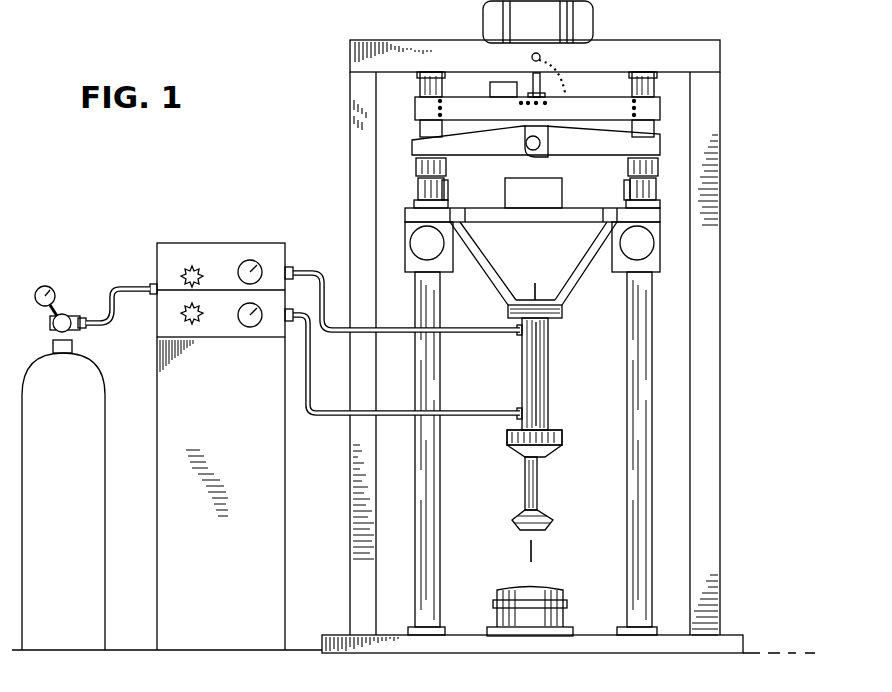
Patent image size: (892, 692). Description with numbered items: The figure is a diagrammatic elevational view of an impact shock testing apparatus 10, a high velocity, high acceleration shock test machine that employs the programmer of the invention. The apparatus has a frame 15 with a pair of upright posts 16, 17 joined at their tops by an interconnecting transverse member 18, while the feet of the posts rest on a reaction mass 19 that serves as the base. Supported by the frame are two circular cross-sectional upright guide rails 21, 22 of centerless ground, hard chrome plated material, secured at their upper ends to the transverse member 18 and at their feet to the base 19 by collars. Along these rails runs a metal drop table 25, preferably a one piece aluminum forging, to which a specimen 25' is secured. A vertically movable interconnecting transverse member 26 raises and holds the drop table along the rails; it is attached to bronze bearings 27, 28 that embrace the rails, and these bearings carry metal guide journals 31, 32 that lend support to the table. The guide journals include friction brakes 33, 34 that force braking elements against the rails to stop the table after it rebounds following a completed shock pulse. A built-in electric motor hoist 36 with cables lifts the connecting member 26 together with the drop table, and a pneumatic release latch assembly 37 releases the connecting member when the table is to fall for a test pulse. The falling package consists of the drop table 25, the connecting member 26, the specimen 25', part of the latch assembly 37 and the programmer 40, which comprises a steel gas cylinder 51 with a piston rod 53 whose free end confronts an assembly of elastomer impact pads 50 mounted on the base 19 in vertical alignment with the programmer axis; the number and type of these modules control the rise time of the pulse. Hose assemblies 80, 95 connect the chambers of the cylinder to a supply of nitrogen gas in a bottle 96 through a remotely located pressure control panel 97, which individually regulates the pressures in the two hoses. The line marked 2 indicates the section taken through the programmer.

The section line 2- 2 is at (545, 292).
The impact shock testing apparatus 10 is at (489, 444).
The frame 15 is at (342, 72).
The upright post 16 is at (350, 573).
The upright post 17 is at (718, 602).
The interconnecting transverse member 18 is at (366, 40).
The reaction mass 19 is at (331, 634).
The guide rail 21 is at (417, 487).
The guide rail 22 is at (650, 497).
The drop table 25 is at (533, 270).
The specimen 25' is at (509, 193).
The interconnecting transverse member 26 is at (456, 270).
The bearing 27 is at (418, 172).
The bearing 28 is at (650, 182).
The guide journal 31 is at (447, 196).
The guide journal 32 is at (650, 206).
The friction brake 33 is at (418, 198).
The friction brake 34 is at (638, 228).
The electric motor hoist 36 is at (596, 5).
The pneumatic release latch assembly 37 is at (566, 133).
The programmer 40 is at (560, 355).
The impact pads 50 is at (566, 598).
The gas cylinder 51 is at (550, 392).
The piston rod 53 is at (540, 488).
The hose assembly 80 is at (325, 412).
The hose assembly 95 is at (318, 272).
The cylinder or bottle 96 is at (105, 572).
The pressure control panel 97 is at (200, 250).